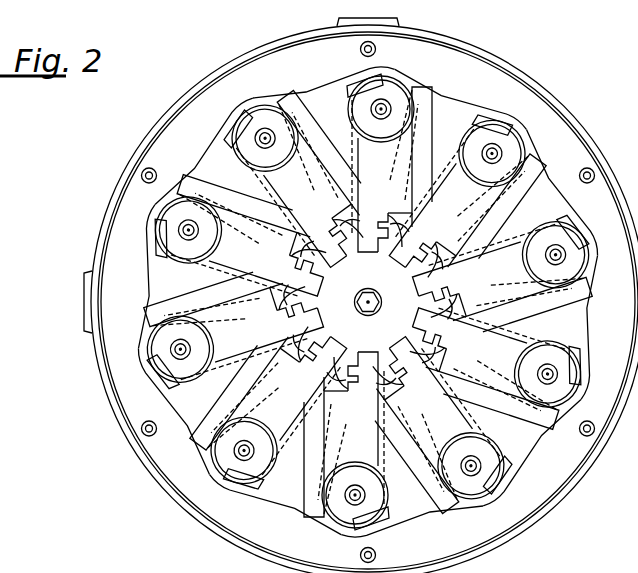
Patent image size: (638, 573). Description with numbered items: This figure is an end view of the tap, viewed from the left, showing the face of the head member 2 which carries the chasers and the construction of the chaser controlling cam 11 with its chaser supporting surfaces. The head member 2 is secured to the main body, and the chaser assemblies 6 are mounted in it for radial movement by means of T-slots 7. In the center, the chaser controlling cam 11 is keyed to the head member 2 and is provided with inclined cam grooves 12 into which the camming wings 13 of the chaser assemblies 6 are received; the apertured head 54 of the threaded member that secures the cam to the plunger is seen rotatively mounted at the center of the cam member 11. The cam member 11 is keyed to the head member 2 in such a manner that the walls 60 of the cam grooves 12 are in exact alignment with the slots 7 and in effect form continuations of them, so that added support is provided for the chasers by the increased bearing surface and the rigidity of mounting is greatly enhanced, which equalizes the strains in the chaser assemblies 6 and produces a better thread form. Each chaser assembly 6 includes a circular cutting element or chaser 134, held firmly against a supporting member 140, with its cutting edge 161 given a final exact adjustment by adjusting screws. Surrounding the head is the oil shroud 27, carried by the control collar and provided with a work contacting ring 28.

The head member 2 is at (368, 301).
The chaser assemblies 6 is at (488, 362).
The T-slots 7 is at (455, 147).
The chaser controlling cam 11 is at (365, 280).
The inclined cam grooves 12 is at (411, 268).
The camming wings 13 is at (362, 221).
The oil shroud 27 is at (466, 44).
The work contacting ring 28 is at (483, 62).
The apertured head 54 is at (381, 301).
The walls of the cam grooves 60 is at (389, 216).
The chaser 134 is at (190, 256).
The supporting member 140 is at (196, 172).
The cutting edge 161 is at (243, 97).